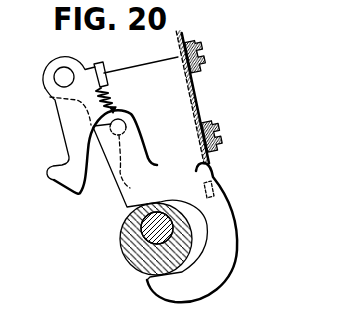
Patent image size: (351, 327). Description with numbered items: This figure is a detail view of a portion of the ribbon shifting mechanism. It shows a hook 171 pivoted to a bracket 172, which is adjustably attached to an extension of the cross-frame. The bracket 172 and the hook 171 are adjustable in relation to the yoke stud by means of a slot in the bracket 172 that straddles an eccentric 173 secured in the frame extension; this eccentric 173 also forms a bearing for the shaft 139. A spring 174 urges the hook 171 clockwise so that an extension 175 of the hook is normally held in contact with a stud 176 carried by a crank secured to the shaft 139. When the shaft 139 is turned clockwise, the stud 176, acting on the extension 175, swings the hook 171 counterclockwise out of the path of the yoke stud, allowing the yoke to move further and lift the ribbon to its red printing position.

The shaft 139 is at (141, 226).
The hook 171 is at (67, 116).
The bracket 172 is at (170, 108).
The eccentric 173 is at (133, 248).
The spring 174 is at (111, 81).
The extension 175 is at (144, 133).
The stud 176 is at (132, 186).